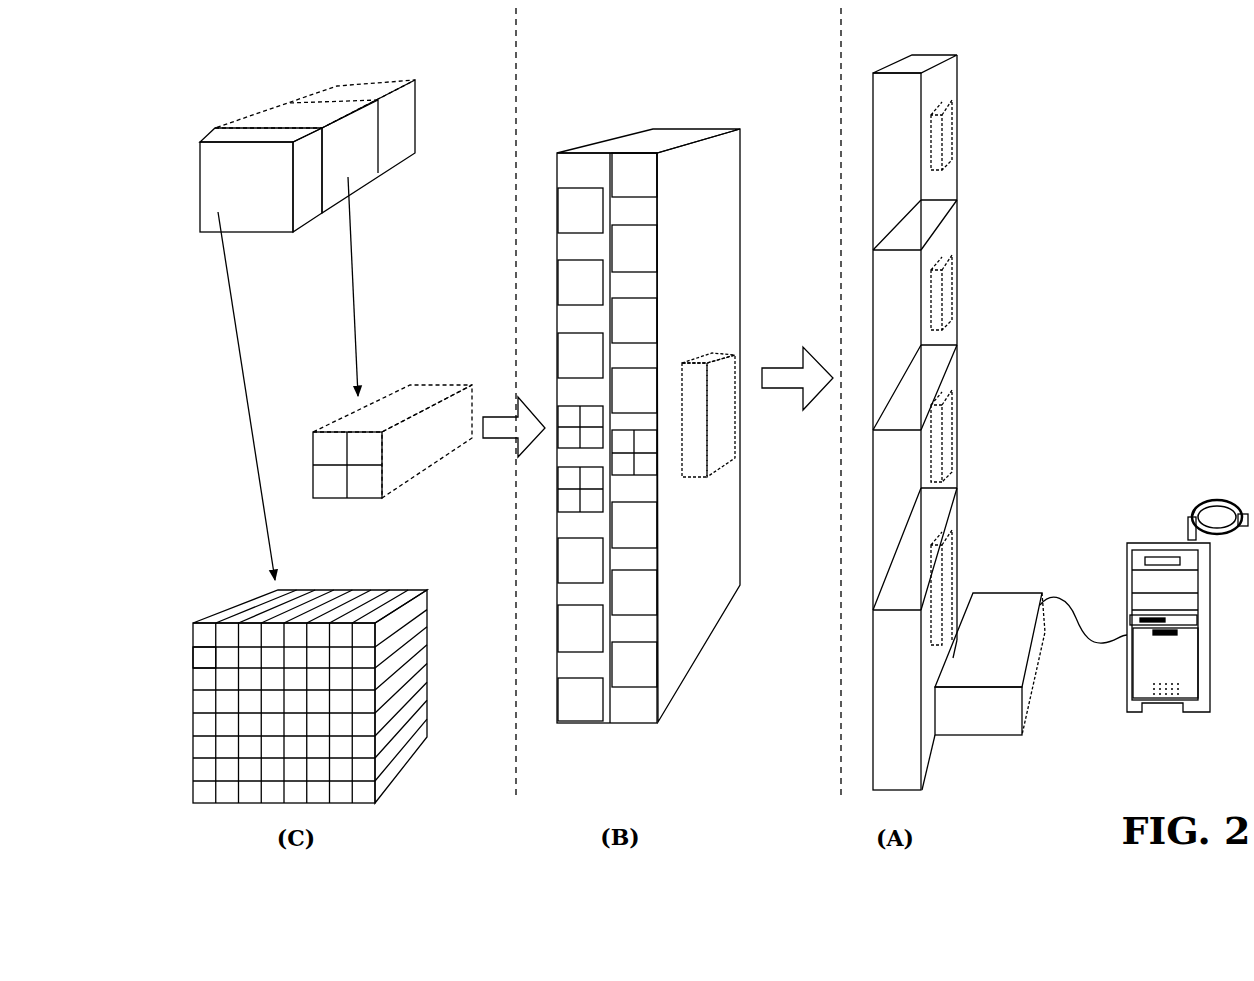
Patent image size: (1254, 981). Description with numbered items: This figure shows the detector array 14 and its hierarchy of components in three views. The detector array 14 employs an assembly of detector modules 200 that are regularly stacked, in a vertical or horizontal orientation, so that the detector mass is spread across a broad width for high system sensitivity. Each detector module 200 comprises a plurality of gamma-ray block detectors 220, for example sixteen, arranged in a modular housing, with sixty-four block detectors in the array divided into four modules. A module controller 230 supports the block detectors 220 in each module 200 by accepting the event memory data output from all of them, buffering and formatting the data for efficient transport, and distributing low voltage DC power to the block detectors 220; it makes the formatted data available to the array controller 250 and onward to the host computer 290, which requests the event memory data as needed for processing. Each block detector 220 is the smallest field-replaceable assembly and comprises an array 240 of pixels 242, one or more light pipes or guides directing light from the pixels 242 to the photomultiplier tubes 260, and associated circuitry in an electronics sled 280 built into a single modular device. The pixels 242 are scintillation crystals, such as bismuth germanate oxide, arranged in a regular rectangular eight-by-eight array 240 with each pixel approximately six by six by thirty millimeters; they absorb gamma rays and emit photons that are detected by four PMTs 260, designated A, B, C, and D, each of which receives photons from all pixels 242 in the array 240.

The detector array 14 is at (1015, 47).
The detector module 200 is at (787, 419).
The block detector 220 is at (416, 405).
The module controller 230 is at (724, 401).
The array of pixels 240 is at (278, 447).
The pixel 242 is at (198, 653).
The array controller 250 is at (1011, 630).
The photomultiplier tubes (PMTs) 260 is at (355, 163).
The electronics sled 280 is at (407, 120).
The host computer 290 is at (1153, 537).